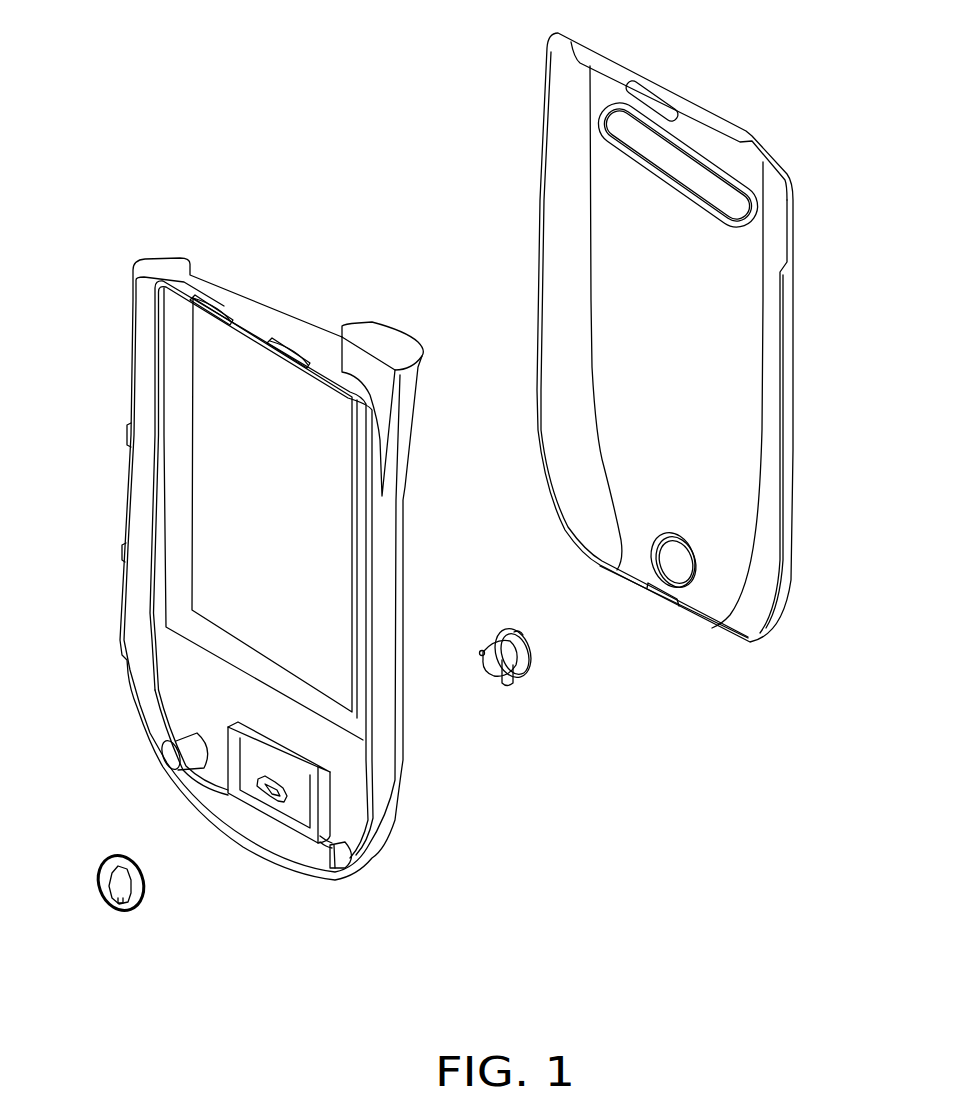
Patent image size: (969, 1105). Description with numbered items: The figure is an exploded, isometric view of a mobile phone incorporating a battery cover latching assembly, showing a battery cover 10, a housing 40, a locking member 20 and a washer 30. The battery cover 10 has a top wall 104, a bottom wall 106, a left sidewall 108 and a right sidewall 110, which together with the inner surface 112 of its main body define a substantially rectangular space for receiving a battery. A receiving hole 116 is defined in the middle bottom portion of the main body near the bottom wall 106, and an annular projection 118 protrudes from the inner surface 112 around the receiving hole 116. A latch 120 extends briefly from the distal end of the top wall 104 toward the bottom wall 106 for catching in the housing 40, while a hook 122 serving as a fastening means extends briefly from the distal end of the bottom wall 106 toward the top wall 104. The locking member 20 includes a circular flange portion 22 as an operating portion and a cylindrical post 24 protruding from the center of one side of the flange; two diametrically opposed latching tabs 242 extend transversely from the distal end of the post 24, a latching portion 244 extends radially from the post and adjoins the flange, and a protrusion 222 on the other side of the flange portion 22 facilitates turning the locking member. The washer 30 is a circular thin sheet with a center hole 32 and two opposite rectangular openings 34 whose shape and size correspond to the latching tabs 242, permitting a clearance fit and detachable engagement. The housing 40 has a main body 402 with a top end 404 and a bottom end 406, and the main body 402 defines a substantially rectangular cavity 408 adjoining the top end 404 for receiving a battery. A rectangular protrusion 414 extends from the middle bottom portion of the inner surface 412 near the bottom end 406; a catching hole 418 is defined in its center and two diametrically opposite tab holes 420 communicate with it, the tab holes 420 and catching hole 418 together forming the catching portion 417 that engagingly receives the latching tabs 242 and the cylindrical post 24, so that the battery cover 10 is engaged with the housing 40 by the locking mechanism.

The battery cover 10 is at (638, 50).
The top wall 104 is at (715, 122).
The bottom wall 106 is at (732, 623).
The left sidewall 108 is at (788, 294).
The right sidewall 110 is at (565, 243).
The inner surface 112 is at (713, 333).
The receiving hole 116 is at (680, 565).
The annular projection 118 is at (690, 550).
The latch 120 is at (647, 100).
The hook 122 is at (660, 590).
The locking member 20 is at (540, 646).
The circular flange portion 22 is at (535, 660).
The protrusion 222 is at (520, 632).
The cylindrical post 24 is at (498, 647).
The latching tabs 242 is at (482, 653).
The latching portion 244 is at (510, 687).
The washer 30 is at (95, 861).
The center hole 32 is at (118, 880).
The rectangular openings 34 is at (118, 897).
The housing 40 is at (231, 262).
The main body 402 is at (162, 558).
The top end 404 is at (267, 313).
The bottom end 406 is at (325, 872).
The rectangular cavity 408 is at (247, 450).
The inner surface 412 is at (343, 750).
The rectangular protrusion 414 is at (307, 792).
The catching portion 417 is at (267, 913).
The catching hole 418 is at (268, 797).
The tab holes 420 is at (257, 780).